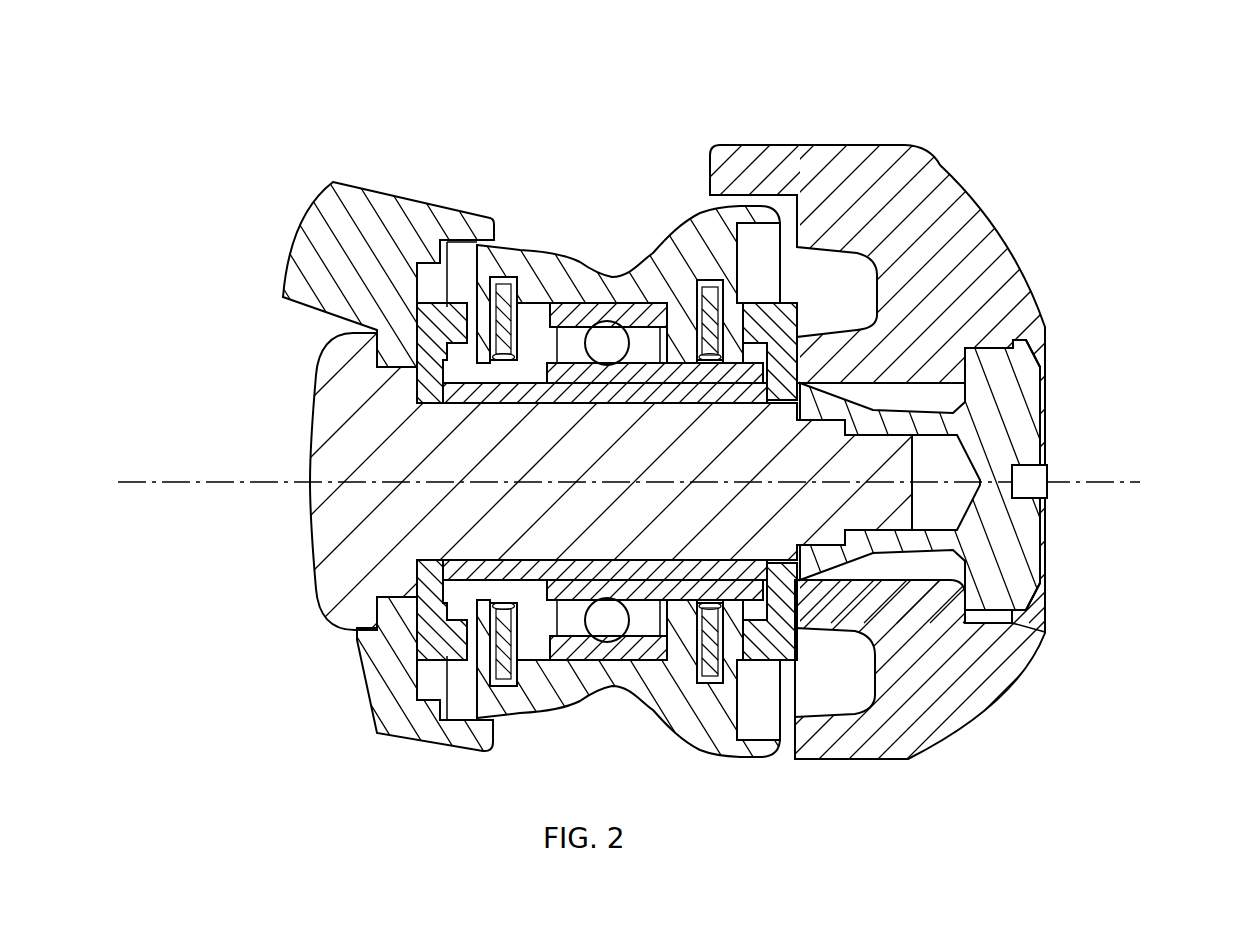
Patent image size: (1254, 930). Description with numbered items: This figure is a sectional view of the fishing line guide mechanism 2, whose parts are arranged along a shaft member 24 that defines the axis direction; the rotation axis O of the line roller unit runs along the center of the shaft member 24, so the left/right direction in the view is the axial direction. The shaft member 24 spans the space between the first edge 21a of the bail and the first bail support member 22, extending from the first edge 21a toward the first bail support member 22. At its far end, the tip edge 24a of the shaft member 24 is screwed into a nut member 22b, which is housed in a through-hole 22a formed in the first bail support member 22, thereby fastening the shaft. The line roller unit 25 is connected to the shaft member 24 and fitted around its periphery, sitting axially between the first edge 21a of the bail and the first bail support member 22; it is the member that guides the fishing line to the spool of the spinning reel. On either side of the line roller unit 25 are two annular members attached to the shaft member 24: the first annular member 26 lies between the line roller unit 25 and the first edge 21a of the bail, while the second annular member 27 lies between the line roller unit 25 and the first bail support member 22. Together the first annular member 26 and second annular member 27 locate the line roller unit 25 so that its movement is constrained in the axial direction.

The fishing line guide mechanism 2 is at (637, 404).
The first edge of bail 21a is at (313, 215).
The first bail support member 22 is at (945, 165).
The through-hole 22a is at (940, 413).
The nut member 22b is at (1040, 455).
The shaft member 24 is at (306, 443).
The tip edge of shaft member 24a is at (903, 508).
The line roller unit 25 is at (613, 211).
The first annular member 26 is at (433, 313).
The second annular member 27 is at (762, 313).
The rotation axis O is at (210, 482).